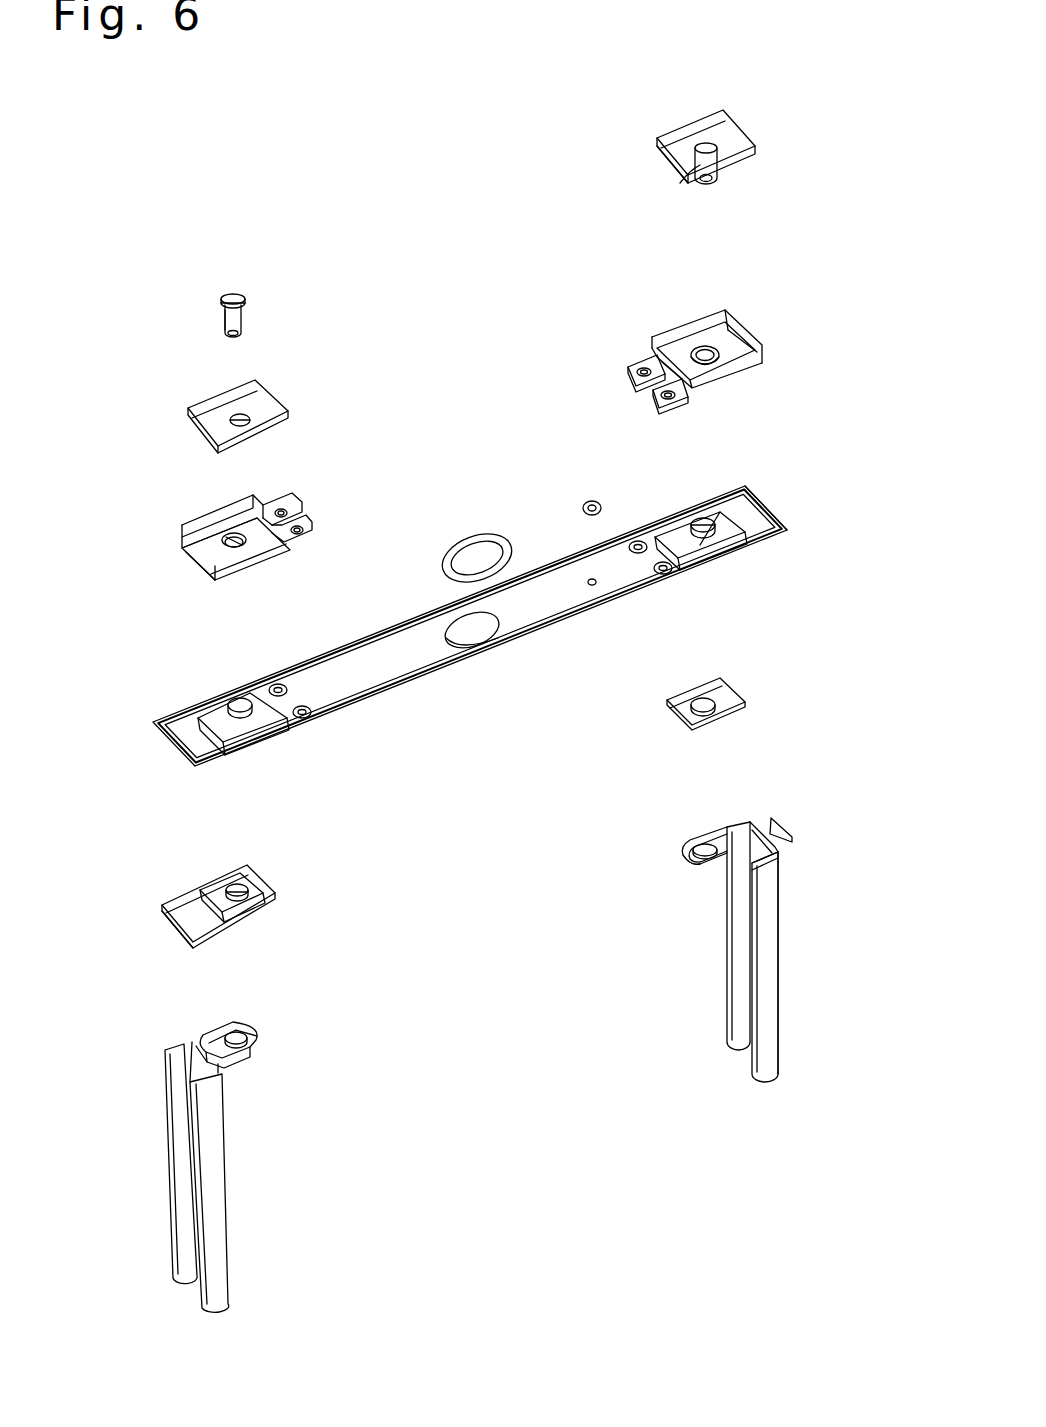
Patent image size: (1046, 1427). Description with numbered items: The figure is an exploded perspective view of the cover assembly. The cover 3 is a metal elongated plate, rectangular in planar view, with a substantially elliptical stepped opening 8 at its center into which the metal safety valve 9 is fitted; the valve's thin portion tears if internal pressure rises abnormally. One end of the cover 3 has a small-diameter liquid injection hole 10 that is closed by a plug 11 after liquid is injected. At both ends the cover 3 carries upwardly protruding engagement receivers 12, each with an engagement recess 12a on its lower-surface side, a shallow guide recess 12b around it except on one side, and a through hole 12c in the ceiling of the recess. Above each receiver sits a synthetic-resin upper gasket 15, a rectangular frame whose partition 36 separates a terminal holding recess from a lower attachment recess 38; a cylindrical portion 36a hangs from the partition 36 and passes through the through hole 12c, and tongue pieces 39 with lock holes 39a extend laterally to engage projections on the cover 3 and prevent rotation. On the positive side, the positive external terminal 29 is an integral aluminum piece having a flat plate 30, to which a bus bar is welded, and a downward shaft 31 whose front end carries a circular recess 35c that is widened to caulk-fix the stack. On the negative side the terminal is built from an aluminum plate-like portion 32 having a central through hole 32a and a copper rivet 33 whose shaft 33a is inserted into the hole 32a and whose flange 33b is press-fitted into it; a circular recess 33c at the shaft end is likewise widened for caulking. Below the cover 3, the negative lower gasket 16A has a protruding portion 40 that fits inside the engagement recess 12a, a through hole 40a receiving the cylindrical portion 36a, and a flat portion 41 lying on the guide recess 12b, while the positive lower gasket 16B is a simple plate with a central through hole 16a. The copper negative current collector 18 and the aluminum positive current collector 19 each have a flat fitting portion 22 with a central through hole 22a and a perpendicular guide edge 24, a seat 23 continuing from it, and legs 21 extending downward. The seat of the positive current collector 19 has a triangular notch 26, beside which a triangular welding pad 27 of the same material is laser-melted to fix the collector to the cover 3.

The cover 3 is at (430, 690).
The opening 8 is at (484, 648).
The safety valve 9 is at (456, 540).
The liquid injection hole 10 is at (596, 590).
The plug 11 is at (588, 502).
The engagement receiver 12 is at (206, 708).
The engagement recess 12a is at (704, 555).
The guide recess 12b is at (762, 545).
The through hole 12c is at (700, 530).
The positive external terminal 29 is at (650, 142).
The flat plate 30 is at (660, 162).
The shaft 31 is at (690, 180).
The circular recess 35c is at (707, 184).
The upper gasket 15 is at (658, 340).
The rivet 33 is at (222, 312).
The shaft 33a is at (242, 318).
The flange 33b is at (246, 298).
The circular recess 33c is at (236, 338).
The plate-like portion 32 is at (196, 408).
The through hole 32a is at (242, 428).
The partition 36 is at (212, 552).
The cylindrical portion 36a is at (245, 560).
The lower attachment recess 38 is at (214, 584).
The tongue pieces 39 is at (290, 512).
The lock holes 39a is at (296, 525).
The positive lower gasket 16B is at (722, 690).
The through hole 16a is at (703, 715).
The negative lower gasket 16A is at (160, 895).
The protruding portion 40 is at (262, 880).
The through hole 40a is at (244, 912).
The flat portion 41 is at (192, 930).
The negative current collector 18 is at (226, 1170).
The positive current collector 19 is at (762, 1090).
The legs 21 is at (782, 908).
The fitting portion 22 is at (690, 845).
The through hole 22a is at (704, 860).
The seat 23 is at (775, 862).
The guide edge 24 is at (690, 866).
The notch 26 is at (760, 838).
The welding pad 27 is at (790, 832).